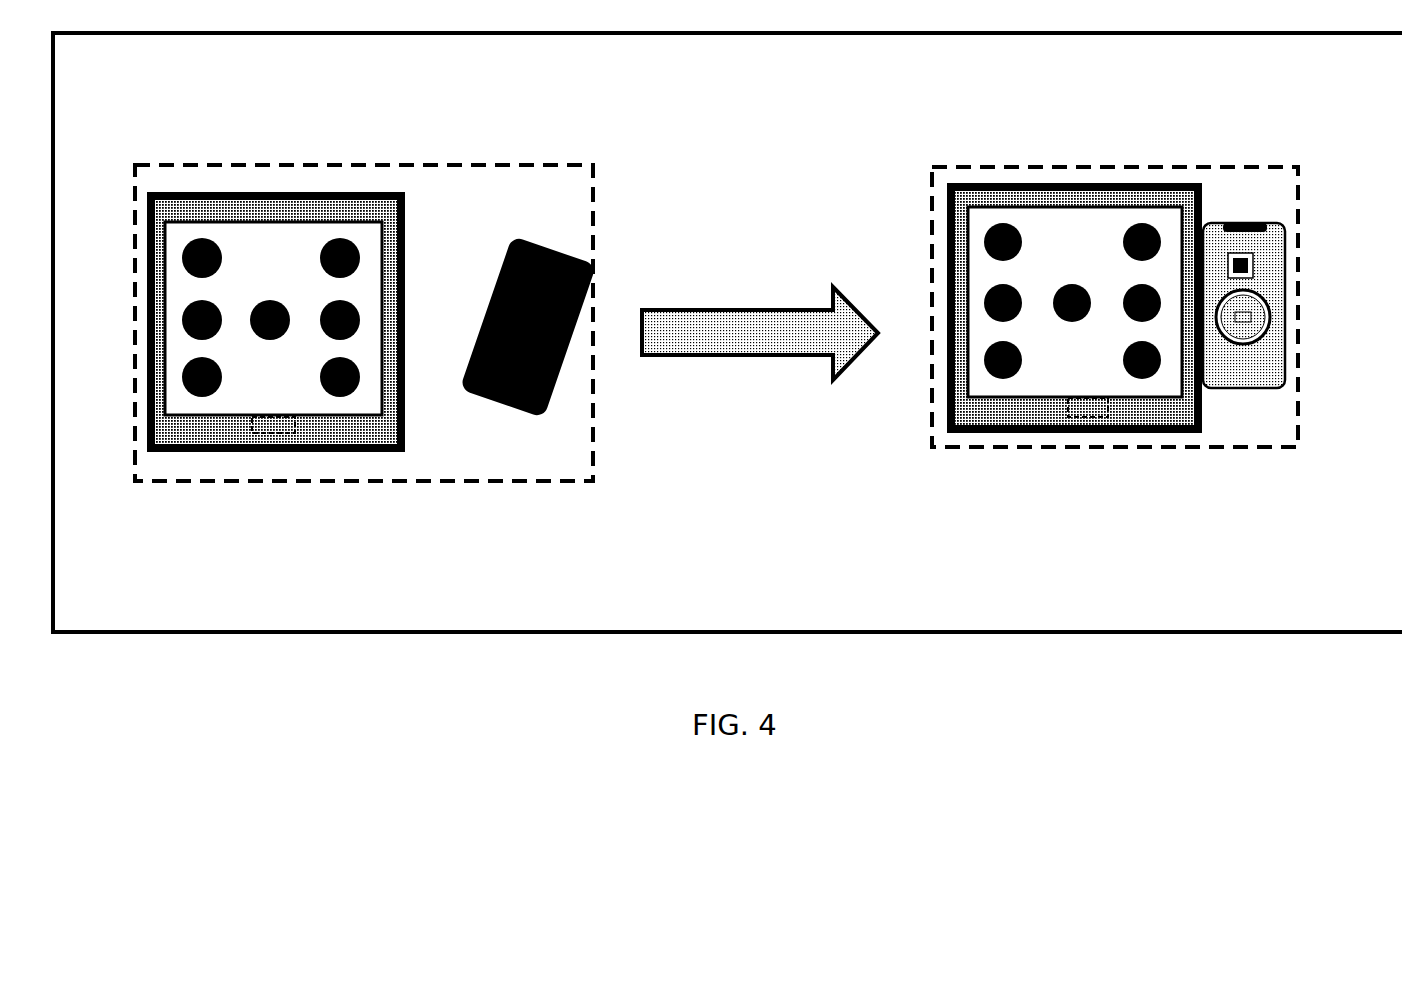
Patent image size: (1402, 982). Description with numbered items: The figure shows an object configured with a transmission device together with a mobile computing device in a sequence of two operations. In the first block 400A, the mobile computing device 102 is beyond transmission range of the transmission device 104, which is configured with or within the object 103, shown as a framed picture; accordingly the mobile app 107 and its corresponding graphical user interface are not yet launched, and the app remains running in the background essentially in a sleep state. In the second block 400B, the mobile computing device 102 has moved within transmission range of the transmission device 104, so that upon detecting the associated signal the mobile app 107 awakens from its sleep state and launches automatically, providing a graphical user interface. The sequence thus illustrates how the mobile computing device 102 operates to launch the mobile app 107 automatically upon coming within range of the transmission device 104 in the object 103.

The mobile computing device 102 is at (593, 253).
The object 103 is at (293, 203).
The transmission device 104 is at (265, 433).
The mobile app 107 is at (1272, 276).
The block 400A is at (455, 485).
The block 400B is at (1235, 452).